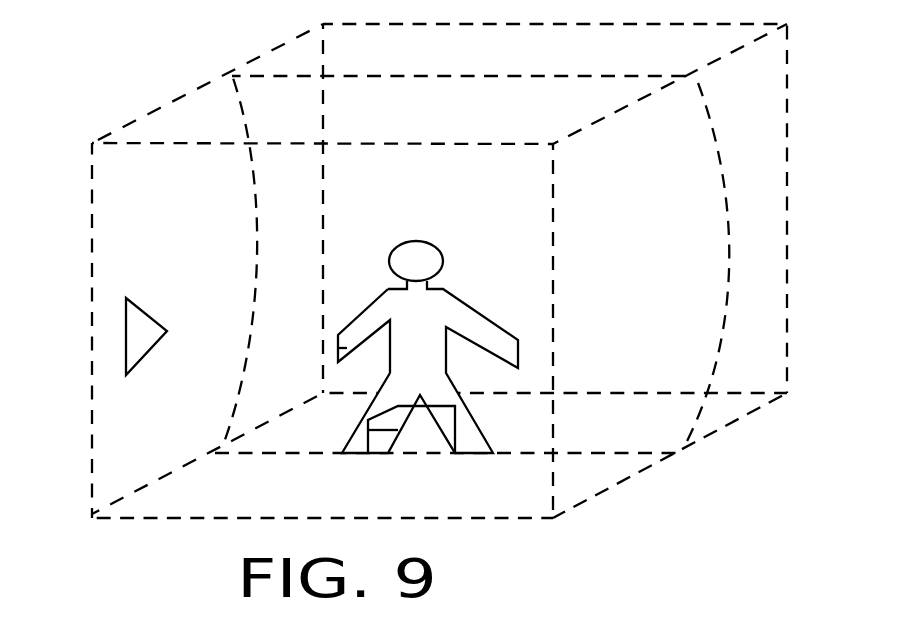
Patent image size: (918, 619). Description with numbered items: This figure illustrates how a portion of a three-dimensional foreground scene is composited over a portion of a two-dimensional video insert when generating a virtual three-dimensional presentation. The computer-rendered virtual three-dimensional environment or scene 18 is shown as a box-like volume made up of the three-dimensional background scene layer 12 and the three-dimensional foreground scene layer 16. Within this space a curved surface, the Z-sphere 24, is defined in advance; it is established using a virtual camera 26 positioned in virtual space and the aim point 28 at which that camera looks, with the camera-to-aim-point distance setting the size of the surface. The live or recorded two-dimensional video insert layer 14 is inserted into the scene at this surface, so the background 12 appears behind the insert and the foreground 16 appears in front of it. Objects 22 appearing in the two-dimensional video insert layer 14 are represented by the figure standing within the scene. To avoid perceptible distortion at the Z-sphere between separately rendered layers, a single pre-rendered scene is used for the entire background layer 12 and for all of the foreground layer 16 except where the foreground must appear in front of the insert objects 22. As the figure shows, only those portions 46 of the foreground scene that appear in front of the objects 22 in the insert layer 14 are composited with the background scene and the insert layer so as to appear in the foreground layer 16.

The three-dimensional background scene layer 12 is at (768, 283).
The two-dimensional video insert layer 14 is at (355, 333).
The three-dimensional foreground scene layer 16 is at (198, 500).
The virtual three-dimensional environment or scene 18 is at (620, 483).
The objects in the two-dimensional video insert layer 22 is at (347, 320).
The Z-sphere 24 is at (725, 180).
The virtual camera 26 is at (126, 327).
The aim point 28 is at (440, 283).
The portion of the foreground scene 46 is at (447, 420).